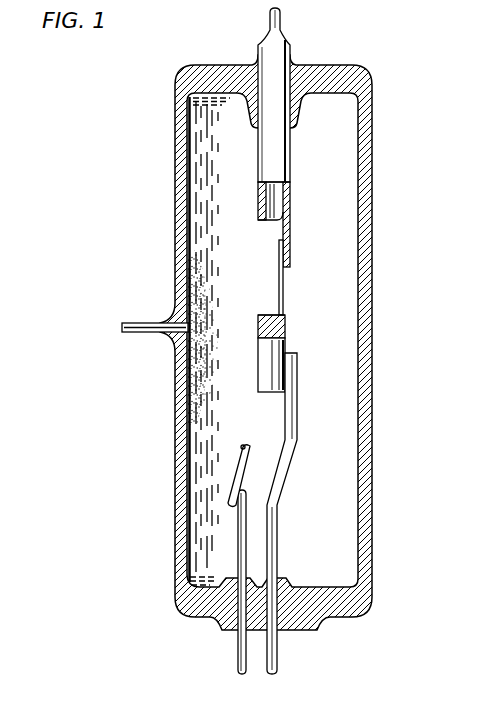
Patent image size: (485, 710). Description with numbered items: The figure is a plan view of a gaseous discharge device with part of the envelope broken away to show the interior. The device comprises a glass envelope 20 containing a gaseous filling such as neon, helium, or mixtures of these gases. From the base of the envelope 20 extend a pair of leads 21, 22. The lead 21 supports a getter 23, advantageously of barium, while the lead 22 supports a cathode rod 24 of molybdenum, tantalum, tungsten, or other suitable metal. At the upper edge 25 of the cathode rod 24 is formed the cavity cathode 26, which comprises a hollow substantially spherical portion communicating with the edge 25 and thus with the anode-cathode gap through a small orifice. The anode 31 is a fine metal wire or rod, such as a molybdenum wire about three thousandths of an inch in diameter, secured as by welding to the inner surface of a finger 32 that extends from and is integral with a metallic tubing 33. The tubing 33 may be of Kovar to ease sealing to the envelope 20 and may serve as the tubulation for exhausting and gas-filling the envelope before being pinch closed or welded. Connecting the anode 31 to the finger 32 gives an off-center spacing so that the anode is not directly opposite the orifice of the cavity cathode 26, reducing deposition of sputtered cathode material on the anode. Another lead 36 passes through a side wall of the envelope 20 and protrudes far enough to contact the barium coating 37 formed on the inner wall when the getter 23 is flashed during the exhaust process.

The glass envelope 20 is at (371, 191).
The lead 21 is at (236, 655).
The lead 22 is at (288, 468).
The getter 23 is at (242, 461).
The cathode rod 24 is at (268, 377).
The upper edge 25 is at (262, 315).
The cavity cathode 26 is at (286, 313).
The anode 31 is at (284, 284).
The finger 32 is at (290, 232).
The metallic tubing 33 is at (290, 157).
The lead 36 is at (137, 322).
The barium coating 37 is at (190, 366).